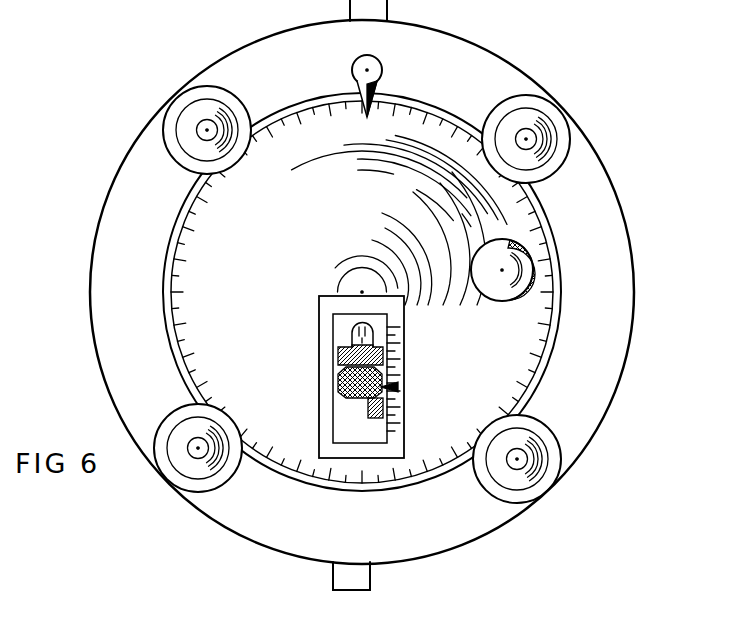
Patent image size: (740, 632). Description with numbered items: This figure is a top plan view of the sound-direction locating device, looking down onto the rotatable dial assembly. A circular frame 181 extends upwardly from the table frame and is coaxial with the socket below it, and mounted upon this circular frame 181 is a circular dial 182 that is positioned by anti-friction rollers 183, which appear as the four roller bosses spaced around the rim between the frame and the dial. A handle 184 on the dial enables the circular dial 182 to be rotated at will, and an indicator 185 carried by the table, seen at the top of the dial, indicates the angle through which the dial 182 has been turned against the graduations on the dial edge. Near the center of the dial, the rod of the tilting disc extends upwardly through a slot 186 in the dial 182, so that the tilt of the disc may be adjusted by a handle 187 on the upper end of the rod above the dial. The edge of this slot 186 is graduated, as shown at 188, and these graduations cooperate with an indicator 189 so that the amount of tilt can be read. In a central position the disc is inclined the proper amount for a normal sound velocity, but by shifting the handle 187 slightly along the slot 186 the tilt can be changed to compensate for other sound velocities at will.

The circular frame 181 is at (618, 386).
The circular dial 182 is at (544, 356).
The anti-friction rollers 183 is at (530, 417).
The handle 184 is at (533, 268).
The indicator 185 is at (372, 98).
The slot 186 is at (340, 328).
The handle 187 is at (333, 385).
The graduations 188 is at (393, 413).
The indicator 189 is at (397, 384).